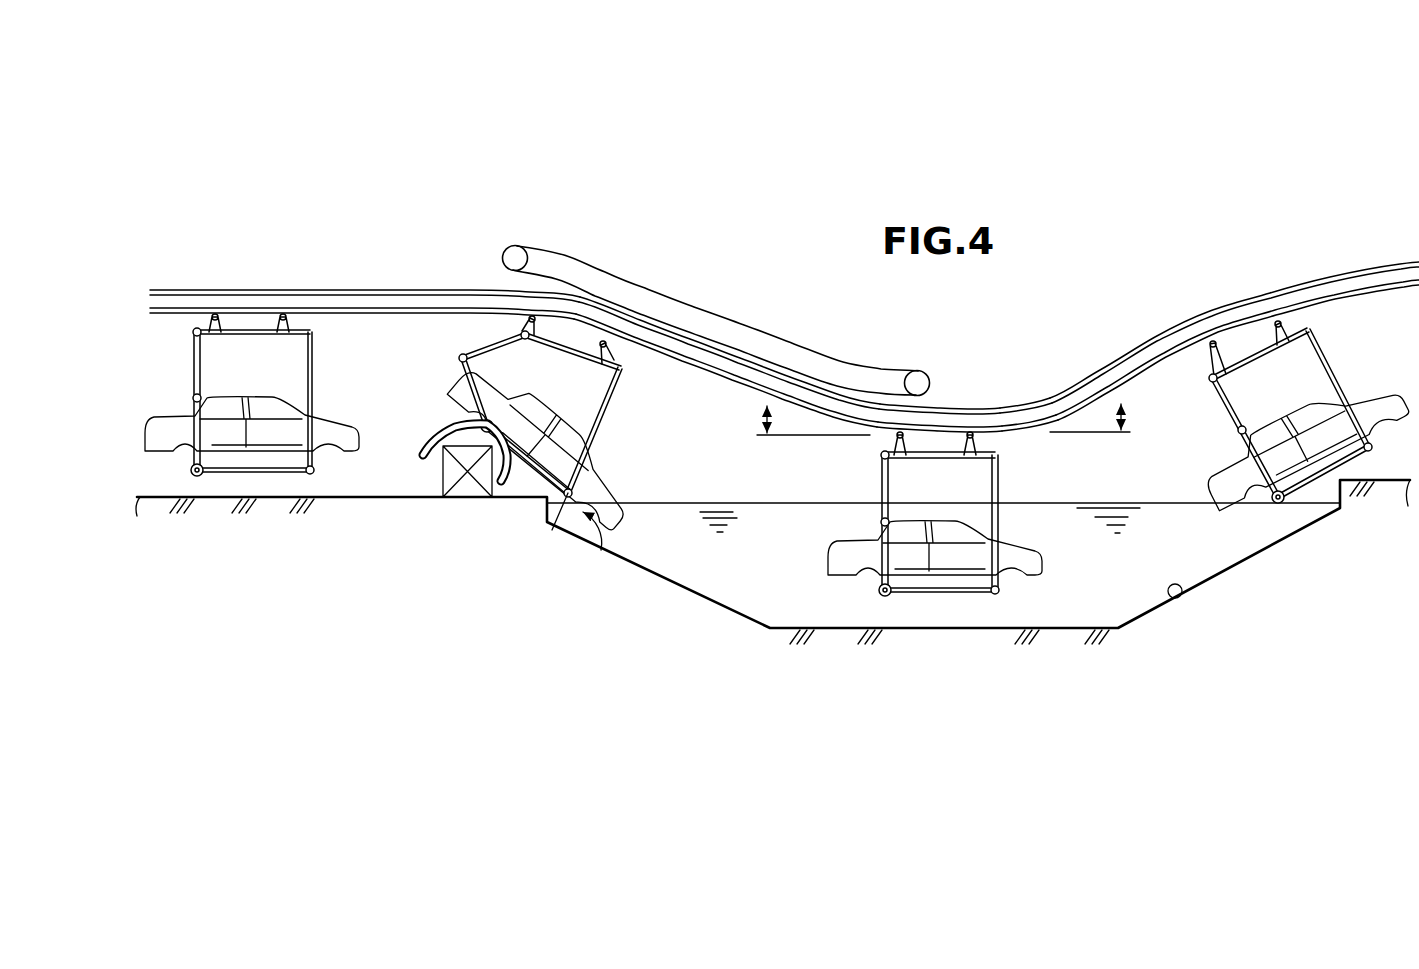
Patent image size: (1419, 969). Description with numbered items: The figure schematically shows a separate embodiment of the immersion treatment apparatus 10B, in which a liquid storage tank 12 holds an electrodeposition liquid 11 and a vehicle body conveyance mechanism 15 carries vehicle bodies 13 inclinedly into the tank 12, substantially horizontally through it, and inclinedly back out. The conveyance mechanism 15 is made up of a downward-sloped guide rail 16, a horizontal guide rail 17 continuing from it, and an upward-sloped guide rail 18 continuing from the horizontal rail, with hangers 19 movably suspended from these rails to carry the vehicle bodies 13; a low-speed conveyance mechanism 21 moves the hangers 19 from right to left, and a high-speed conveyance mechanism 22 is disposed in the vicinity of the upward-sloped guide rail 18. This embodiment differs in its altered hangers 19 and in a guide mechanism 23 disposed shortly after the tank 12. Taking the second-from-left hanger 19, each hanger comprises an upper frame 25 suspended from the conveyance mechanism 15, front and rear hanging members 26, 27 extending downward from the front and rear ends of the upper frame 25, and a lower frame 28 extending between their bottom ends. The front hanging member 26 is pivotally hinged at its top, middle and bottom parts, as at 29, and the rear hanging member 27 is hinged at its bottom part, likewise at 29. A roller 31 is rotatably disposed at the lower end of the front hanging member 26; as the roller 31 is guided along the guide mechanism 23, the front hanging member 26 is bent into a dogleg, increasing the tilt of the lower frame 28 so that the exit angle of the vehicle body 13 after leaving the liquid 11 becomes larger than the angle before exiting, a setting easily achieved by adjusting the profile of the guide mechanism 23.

The immersion treatment apparatus 10B is at (545, 130).
The electrodeposition liquid 11 is at (788, 517).
The liquid storage tank 12 is at (1180, 597).
The vehicle body 13 is at (343, 419).
The vehicle body conveyance mechanism 15 is at (1157, 332).
The downward-sloped guide rail 16 is at (1160, 378).
The horizontal guide rail 17 is at (1008, 433).
The upward-sloped guide rail 18 is at (716, 392).
The hanger 19 is at (189, 362).
The low-speed conveyance mechanism 21 is at (1028, 407).
The high-speed conveyance mechanism 22 is at (658, 294).
The guide mechanism 23 is at (422, 455).
The upper frame 25 is at (623, 370).
The front hanging member 26 is at (490, 347).
The rear hanging member 27 is at (598, 418).
The lower frame 28 is at (517, 497).
The hinge 29 is at (523, 333).
The roller 31 is at (482, 426).